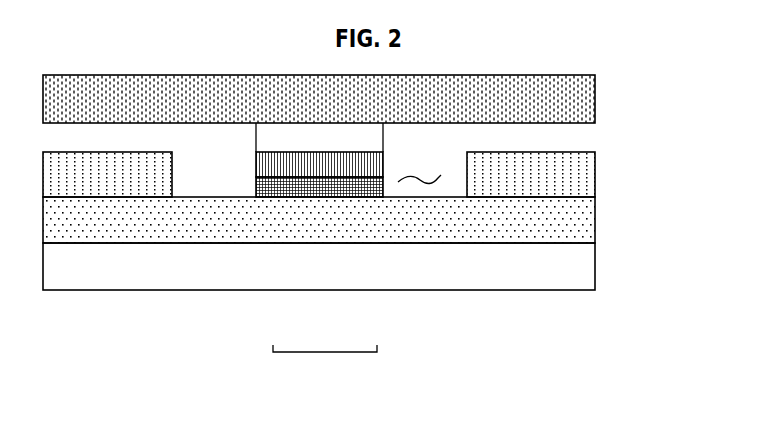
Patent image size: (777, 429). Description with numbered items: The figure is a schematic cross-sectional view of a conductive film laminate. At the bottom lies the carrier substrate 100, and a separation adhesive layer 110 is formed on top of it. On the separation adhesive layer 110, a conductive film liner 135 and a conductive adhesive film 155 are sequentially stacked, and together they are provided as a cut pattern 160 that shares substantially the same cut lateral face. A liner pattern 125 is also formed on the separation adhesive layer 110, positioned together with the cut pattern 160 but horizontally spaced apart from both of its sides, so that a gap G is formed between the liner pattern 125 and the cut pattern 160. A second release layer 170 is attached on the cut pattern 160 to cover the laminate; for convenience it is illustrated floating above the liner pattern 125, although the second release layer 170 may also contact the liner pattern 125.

The second release layer 170 is at (587, 107).
The liner pattern 125 is at (582, 183).
The conductive adhesive film 155 is at (370, 140).
The conductive film liner 135 is at (303, 182).
The cut pattern 160 is at (325, 352).
The separation adhesive layer 110 is at (582, 233).
The carrier substrate 100 is at (582, 272).
The gap G is at (418, 170).